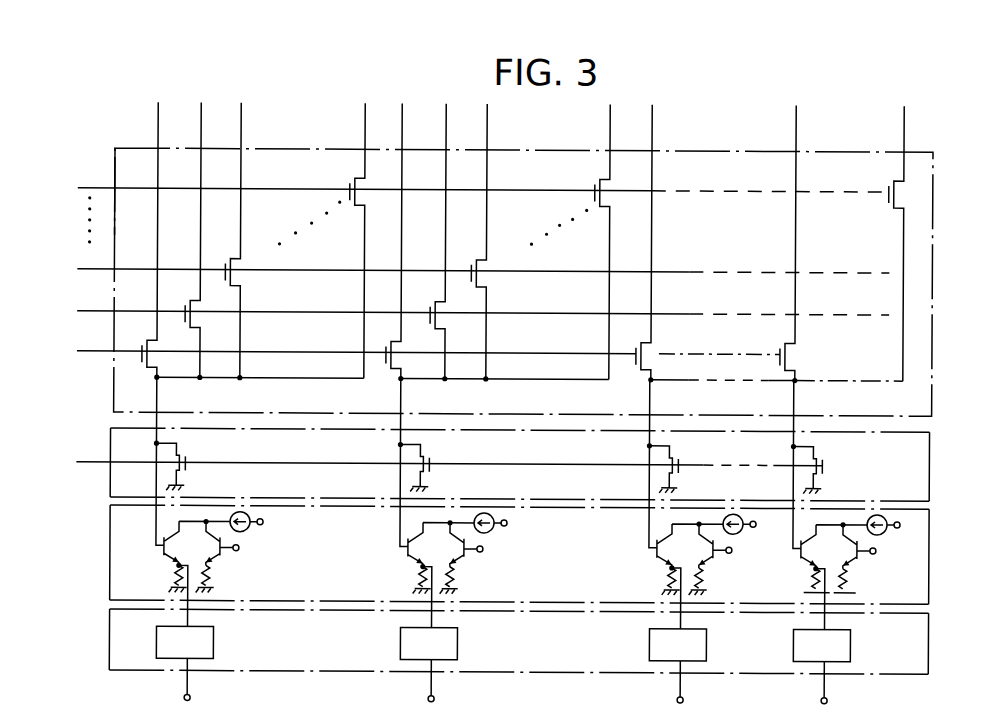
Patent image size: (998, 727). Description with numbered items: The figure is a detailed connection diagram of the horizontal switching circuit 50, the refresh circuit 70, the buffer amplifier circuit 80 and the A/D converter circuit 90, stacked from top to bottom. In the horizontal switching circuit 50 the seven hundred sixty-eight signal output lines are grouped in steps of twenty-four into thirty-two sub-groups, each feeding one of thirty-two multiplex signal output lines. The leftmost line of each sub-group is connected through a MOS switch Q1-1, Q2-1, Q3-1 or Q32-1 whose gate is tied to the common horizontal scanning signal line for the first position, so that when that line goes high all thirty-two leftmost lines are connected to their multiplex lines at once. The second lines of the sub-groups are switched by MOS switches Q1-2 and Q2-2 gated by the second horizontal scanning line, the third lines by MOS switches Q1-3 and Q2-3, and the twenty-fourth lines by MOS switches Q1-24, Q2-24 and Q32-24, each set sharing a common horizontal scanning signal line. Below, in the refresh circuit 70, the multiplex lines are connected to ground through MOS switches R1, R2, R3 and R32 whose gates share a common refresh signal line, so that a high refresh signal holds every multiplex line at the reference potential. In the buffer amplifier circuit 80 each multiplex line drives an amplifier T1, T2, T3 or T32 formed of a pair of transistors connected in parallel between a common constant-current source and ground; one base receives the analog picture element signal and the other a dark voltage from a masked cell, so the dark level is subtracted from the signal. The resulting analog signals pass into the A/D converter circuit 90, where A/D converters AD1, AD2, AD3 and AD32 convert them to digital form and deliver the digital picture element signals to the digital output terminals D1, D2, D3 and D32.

The horizontal switching circuit 50 is at (934, 251).
The refresh circuit 70 is at (932, 468).
The buffer amplifier circuit 80 is at (932, 553).
The A/D converter circuit 90 is at (932, 649).
The MOS switch Q1-1 is at (143, 239).
The MOS switch Q1-2 is at (186, 239).
The MOS switch Q1-3 is at (226, 240).
The MOS switch Q1-24 is at (340, 240).
The MOS switch Q2-1 is at (387, 240).
The MOS switch Q2-2 is at (430, 241).
The MOS switch Q2-3 is at (472, 241).
The MOS switch Q2-24 is at (588, 241).
The MOS switch Q3-1 is at (635, 242).
The MOS switch Q32-1 is at (768, 242).
The MOS switch Q32-24 is at (876, 243).
The MOS switch R1 is at (185, 466).
The MOS switch R2 is at (429, 467).
The MOS switch R3 is at (678, 468).
The MOS switch R32 is at (827, 469).
The amplifier T1 is at (214, 569).
The amplifier T2 is at (458, 571).
The amplifier T3 is at (707, 572).
The amplifier T32 is at (801, 548).
The A/D converter AD1 is at (217, 640).
The A/D converter AD2 is at (461, 640).
The A/D converter AD3 is at (710, 640).
The A/D converter AD32 is at (854, 646).
The digital output terminal D1 is at (202, 683).
The digital output terminal D2 is at (446, 685).
The digital output terminal D3 is at (695, 686).
The digital output terminal D32 is at (845, 687).